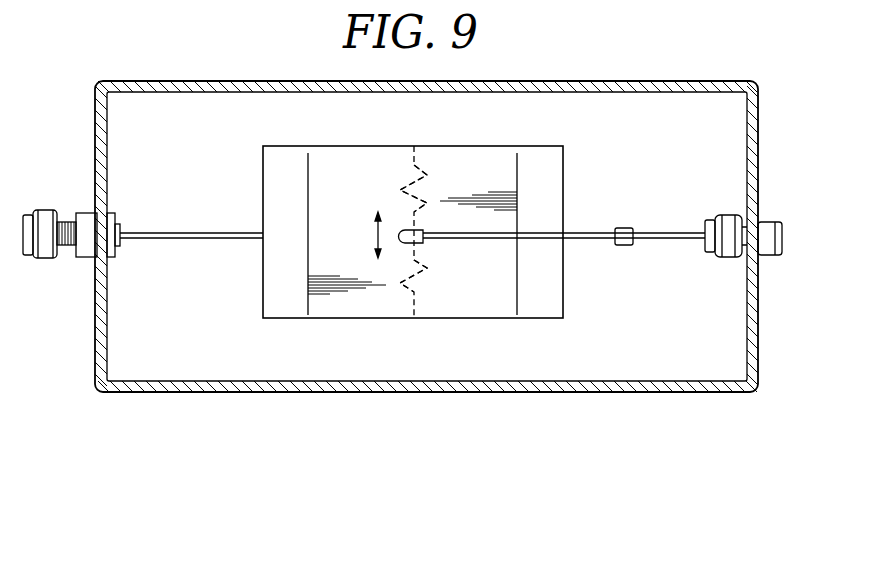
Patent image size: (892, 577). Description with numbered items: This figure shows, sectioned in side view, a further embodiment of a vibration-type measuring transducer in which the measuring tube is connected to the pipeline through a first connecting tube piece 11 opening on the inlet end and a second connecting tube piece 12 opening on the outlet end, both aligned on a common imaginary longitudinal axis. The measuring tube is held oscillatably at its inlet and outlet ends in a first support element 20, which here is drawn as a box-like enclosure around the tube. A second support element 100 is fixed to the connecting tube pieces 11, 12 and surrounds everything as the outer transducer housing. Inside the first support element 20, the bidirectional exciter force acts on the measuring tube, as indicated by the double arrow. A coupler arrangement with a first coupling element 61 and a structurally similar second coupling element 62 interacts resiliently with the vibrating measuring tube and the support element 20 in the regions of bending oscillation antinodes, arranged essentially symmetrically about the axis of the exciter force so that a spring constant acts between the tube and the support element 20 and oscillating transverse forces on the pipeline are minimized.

The second support element 100 is at (427, 392).
The first support element 20 is at (563, 293).
The first connecting tube piece 11 is at (185, 240).
The second connecting tube piece 12 is at (660, 232).
The first coupling element 61 is at (427, 188).
The second coupling element 62 is at (428, 285).